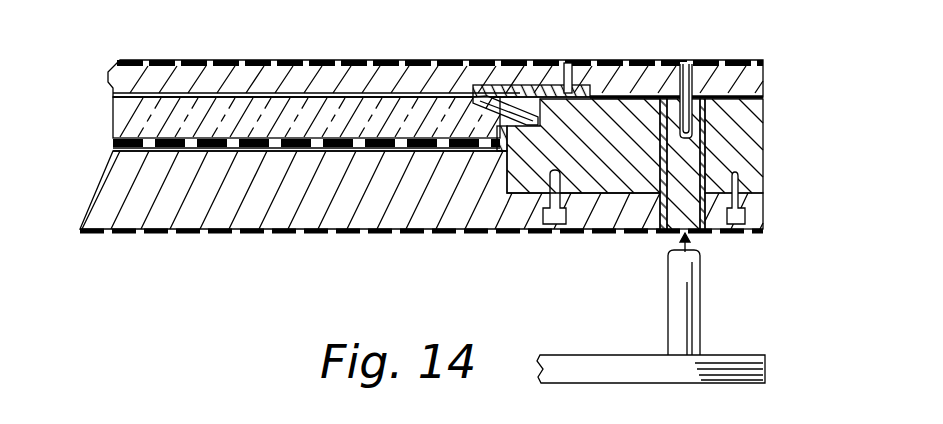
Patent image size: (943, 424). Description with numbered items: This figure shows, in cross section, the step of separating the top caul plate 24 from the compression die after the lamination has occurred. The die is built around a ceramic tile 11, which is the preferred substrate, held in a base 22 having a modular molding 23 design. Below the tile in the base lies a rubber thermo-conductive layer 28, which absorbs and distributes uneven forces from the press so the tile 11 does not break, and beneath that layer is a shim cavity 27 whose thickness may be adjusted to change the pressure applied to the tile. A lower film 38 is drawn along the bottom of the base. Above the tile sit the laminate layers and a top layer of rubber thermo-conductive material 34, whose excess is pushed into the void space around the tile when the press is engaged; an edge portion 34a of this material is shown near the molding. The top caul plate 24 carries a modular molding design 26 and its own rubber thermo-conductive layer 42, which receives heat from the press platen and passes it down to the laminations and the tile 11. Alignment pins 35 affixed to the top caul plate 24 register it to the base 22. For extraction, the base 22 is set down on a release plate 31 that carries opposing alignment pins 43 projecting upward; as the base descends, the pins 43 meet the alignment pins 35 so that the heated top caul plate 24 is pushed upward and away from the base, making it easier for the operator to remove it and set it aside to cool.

The ceramic tile 11 is at (115, 123).
The base 22 is at (103, 192).
The modular molding 23 is at (757, 145).
The top caul plate 24 is at (757, 82).
The modular molding design 26 is at (546, 84).
The shim cavity 27 is at (115, 152).
The rubber thermo-conductive layer 28 is at (113, 142).
The release plate 31 is at (720, 362).
The top layer of rubber thermo-conductive material 34 is at (113, 93).
The sheet edge 34a is at (763, 97).
The alignment pins 35 is at (695, 180).
The bottom film 38 is at (167, 233).
The rubber thermo-conductive layer 42 is at (407, 63).
The opposing alignment pins 43 is at (687, 297).